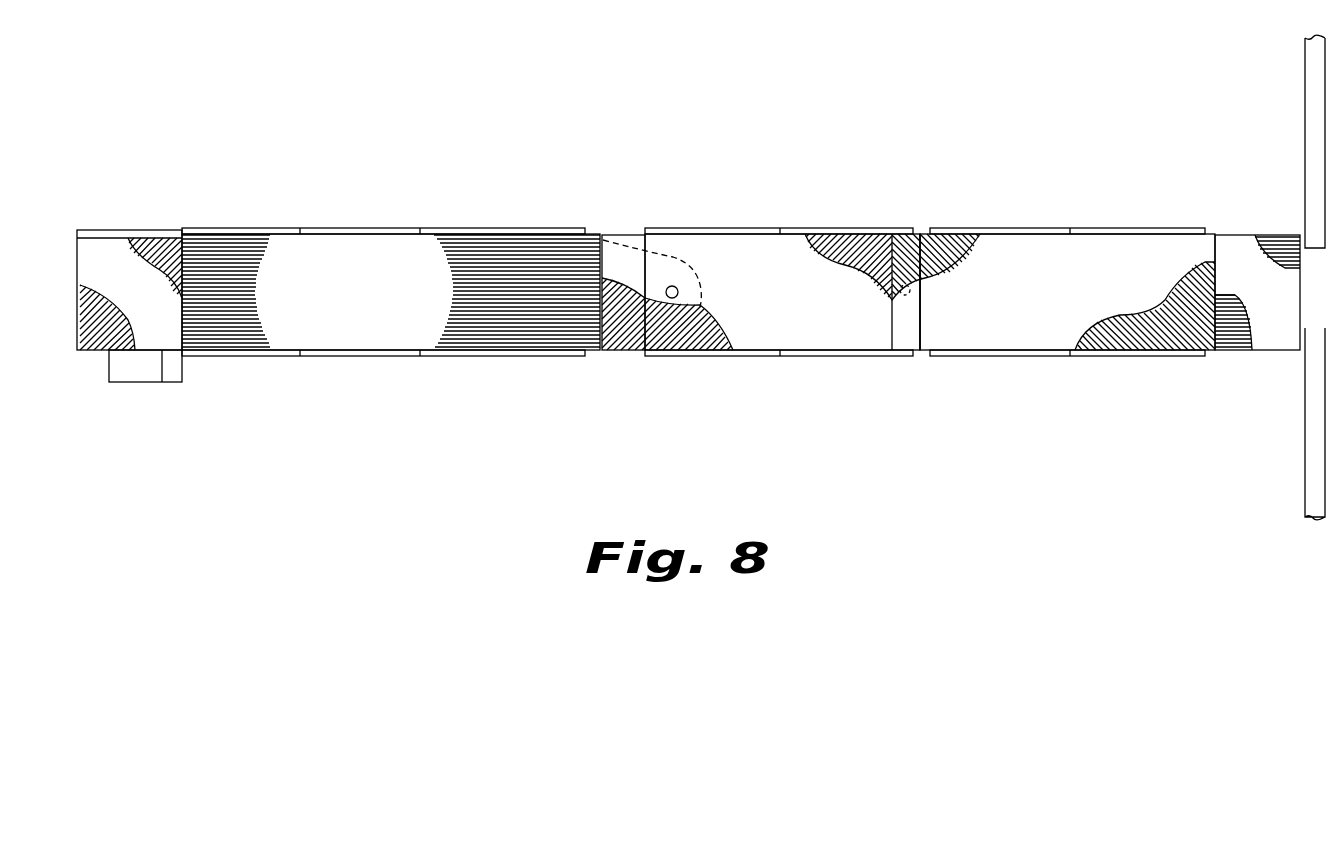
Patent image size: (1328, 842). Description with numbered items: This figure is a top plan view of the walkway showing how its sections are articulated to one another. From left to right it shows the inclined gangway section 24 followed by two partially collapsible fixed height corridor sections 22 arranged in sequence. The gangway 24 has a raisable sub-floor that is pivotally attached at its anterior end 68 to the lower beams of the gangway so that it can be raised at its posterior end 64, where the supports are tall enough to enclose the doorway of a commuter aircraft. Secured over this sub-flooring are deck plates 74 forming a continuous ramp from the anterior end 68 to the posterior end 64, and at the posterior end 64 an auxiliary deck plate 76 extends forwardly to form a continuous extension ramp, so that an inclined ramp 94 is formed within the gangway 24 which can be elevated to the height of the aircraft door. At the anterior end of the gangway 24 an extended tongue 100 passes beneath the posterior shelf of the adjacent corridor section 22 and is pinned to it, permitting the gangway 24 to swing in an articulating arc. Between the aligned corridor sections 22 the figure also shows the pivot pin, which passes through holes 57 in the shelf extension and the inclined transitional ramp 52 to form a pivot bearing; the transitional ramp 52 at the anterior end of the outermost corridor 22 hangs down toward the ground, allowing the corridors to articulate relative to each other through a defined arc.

The corridor section 22 is at (782, 200).
The inclined gangway section 24 is at (365, 205).
The inclined transitional ramp 52 is at (1277, 240).
The holes 57 is at (898, 290).
The posterior end 64 is at (82, 377).
The anterior end 68 is at (594, 368).
The deck plates 74 is at (225, 248).
The auxiliary deck plate 76 is at (138, 242).
The inclined ramp 94 is at (375, 303).
The extended tongue 100 is at (618, 290).